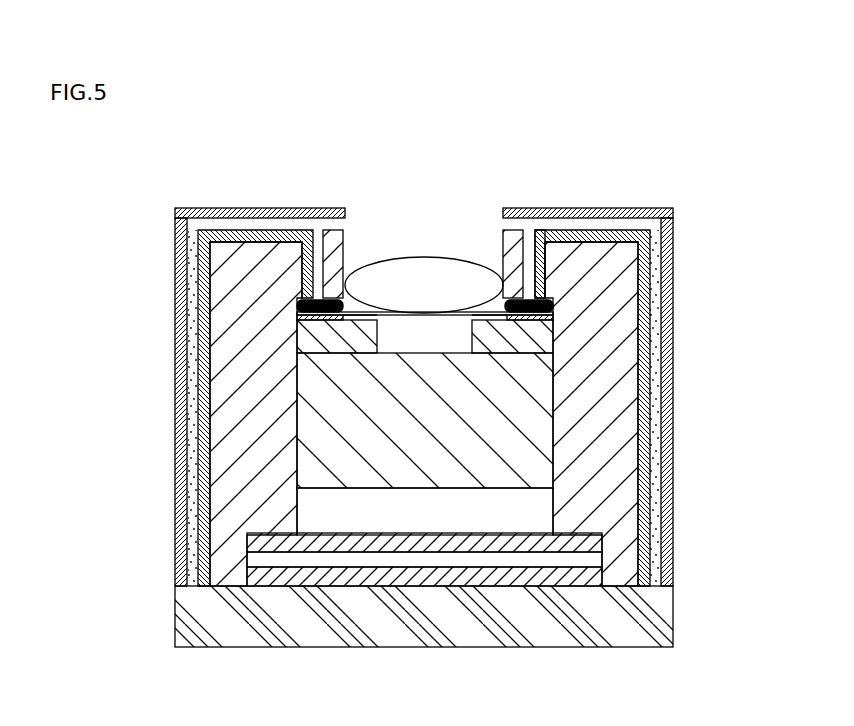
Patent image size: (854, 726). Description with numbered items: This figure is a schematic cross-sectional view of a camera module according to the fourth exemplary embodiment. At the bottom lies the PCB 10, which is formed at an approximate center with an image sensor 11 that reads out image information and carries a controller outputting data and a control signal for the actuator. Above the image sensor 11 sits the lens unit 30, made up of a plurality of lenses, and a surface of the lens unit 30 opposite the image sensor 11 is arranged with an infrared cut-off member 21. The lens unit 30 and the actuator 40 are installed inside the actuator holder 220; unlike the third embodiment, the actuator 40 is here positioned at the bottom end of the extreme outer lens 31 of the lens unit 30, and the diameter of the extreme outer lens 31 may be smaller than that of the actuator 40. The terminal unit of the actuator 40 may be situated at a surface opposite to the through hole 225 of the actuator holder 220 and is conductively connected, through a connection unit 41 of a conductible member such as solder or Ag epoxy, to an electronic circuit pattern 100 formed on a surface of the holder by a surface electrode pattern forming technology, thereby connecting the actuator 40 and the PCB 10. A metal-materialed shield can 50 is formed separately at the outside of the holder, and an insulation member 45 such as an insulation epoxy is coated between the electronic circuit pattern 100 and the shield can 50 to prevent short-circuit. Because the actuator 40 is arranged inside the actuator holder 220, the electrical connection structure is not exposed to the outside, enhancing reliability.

The PCB 10 is at (385, 640).
The image sensor 11 is at (508, 578).
The infrared cut-off member 21 is at (487, 568).
The lens unit 30 is at (507, 395).
The extreme outer lens 31 is at (400, 283).
The actuator 40 is at (455, 322).
The connection unit 41 is at (553, 302).
The insulation member 45 is at (193, 300).
The shield can 50 is at (605, 210).
The electronic circuit pattern 100 is at (198, 462).
The actuator holder 220 is at (223, 530).
The through hole 225 is at (540, 248).